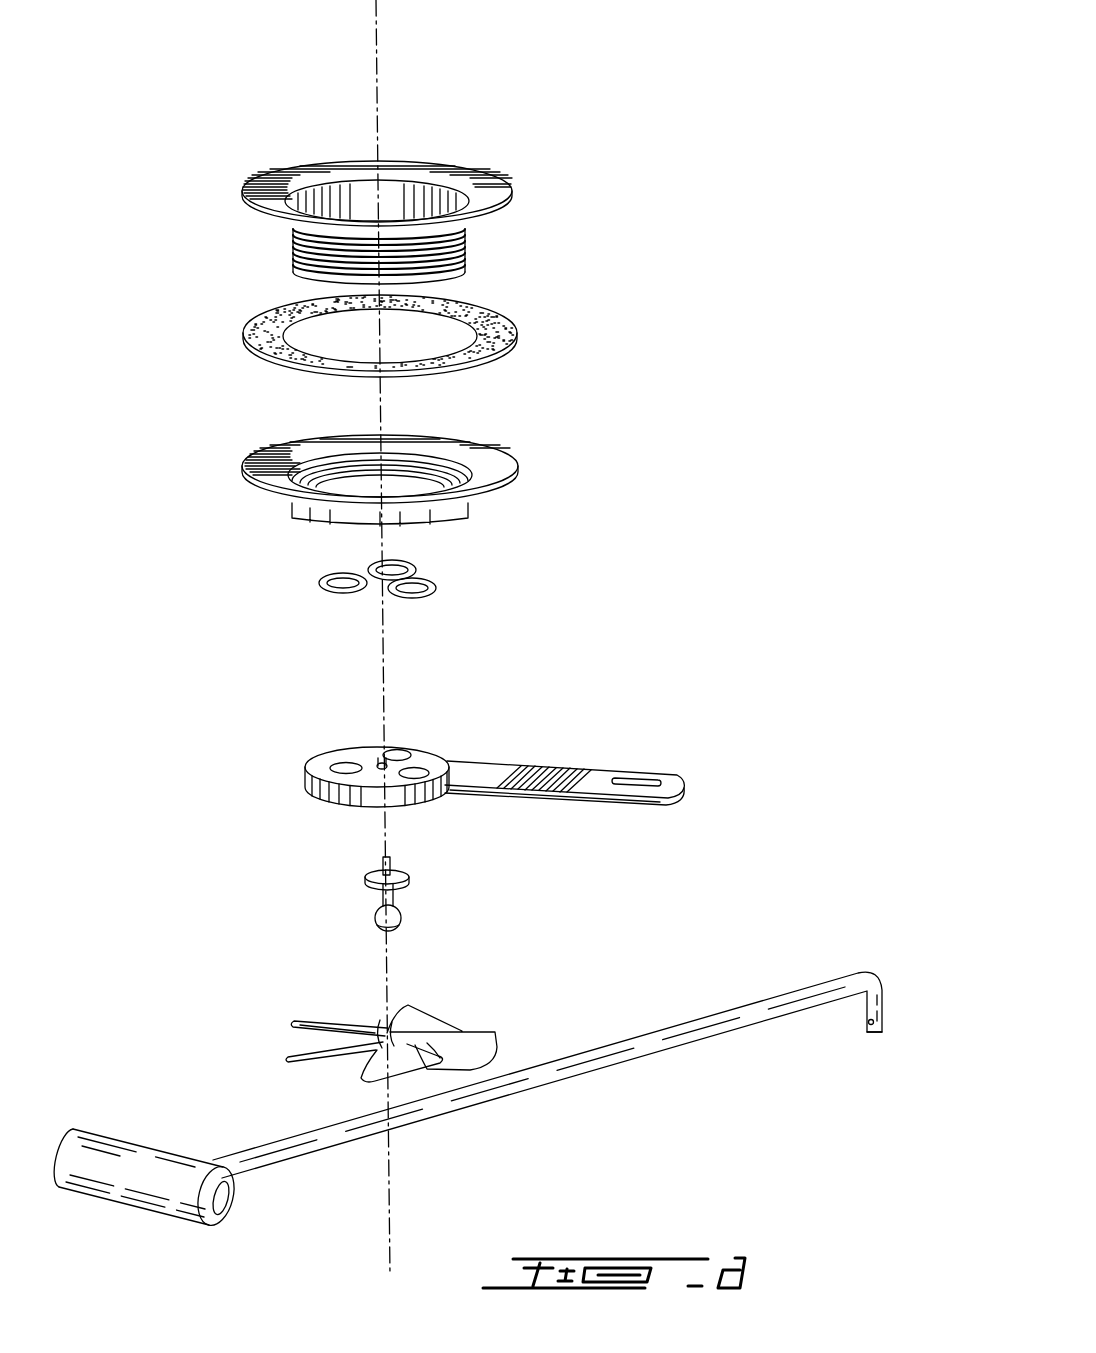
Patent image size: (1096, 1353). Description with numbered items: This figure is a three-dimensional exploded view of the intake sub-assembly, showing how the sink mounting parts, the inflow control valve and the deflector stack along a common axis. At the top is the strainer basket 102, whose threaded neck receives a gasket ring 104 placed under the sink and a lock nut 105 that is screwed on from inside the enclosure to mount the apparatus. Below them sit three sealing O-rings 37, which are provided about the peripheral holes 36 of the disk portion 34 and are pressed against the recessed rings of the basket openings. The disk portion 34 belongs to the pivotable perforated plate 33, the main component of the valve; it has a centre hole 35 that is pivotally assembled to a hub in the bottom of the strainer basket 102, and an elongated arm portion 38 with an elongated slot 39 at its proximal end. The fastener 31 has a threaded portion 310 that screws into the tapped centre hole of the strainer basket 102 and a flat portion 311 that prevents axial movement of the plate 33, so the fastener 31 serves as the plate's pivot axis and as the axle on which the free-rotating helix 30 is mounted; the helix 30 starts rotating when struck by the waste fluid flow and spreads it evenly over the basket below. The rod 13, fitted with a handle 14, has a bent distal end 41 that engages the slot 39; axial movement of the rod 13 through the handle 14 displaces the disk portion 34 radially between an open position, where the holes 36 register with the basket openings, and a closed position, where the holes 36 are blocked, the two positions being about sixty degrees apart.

The strainer basket 102 is at (514, 198).
The gasket ring 104 is at (516, 342).
The lock nut 105 is at (515, 492).
The sealing O-rings 37 is at (323, 588).
The disk portion 34 is at (308, 792).
The centre hole 35 is at (381, 764).
The peripheral holes 36 is at (396, 752).
The pivotable perforated plate 33 is at (487, 772).
The elongated arm portion 38 is at (580, 788).
The elongated slot 39 is at (660, 780).
The threaded portion 310 is at (382, 864).
The flat portion 311 is at (366, 880).
The fastener 31 is at (376, 922).
The free-rotating helix 30 is at (483, 1024).
The rod 13 is at (627, 1052).
The bent distal end 41 is at (878, 1034).
The handle 14 is at (222, 1200).